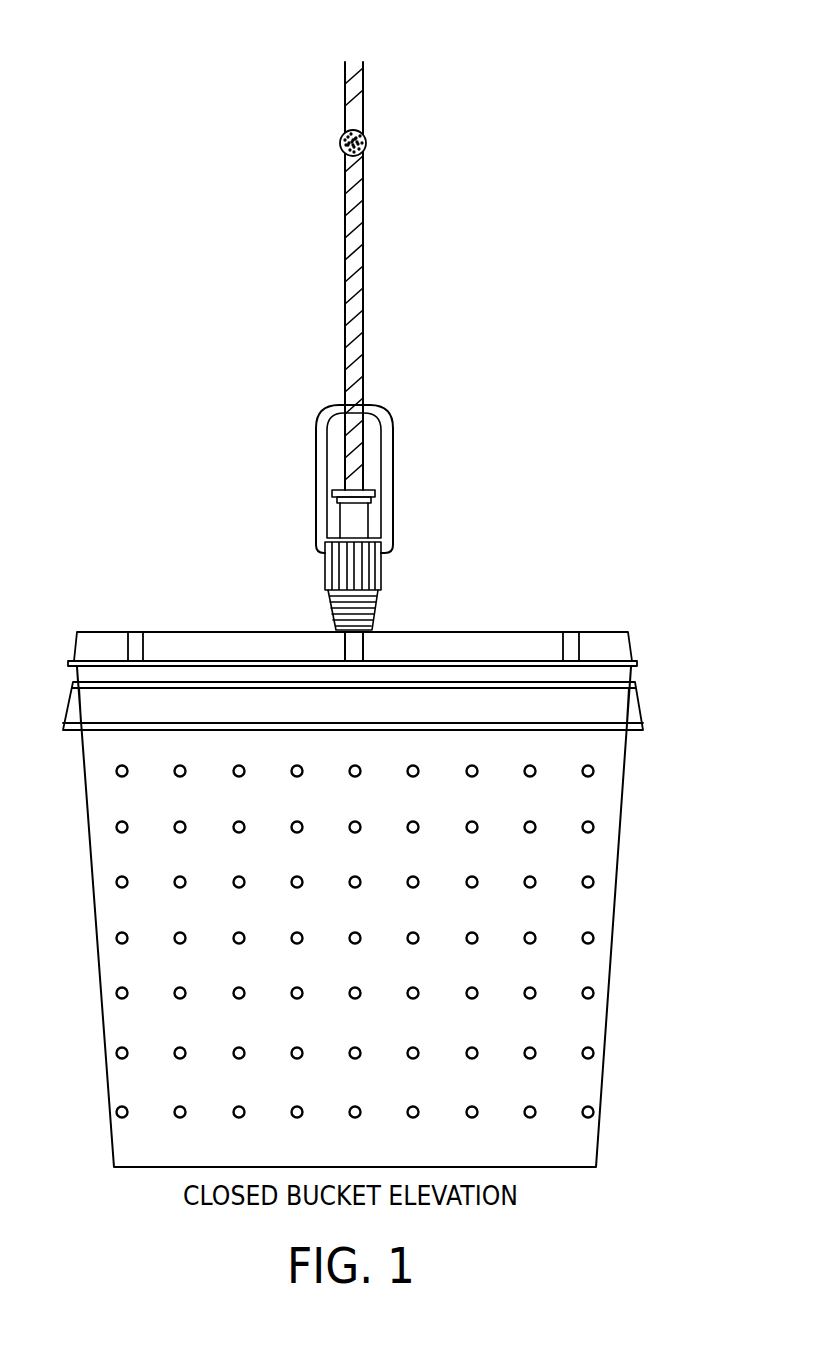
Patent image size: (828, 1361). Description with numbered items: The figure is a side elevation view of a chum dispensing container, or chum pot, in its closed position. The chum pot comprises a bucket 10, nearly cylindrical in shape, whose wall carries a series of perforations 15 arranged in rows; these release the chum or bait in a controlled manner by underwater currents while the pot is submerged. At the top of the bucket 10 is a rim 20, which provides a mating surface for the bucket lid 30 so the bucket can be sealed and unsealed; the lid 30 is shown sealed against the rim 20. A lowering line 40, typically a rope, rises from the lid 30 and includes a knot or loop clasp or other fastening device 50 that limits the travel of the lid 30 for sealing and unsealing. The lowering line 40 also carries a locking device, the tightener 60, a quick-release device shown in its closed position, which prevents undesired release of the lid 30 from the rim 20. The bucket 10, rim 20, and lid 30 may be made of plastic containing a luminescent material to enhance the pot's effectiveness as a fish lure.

The bucket 10 is at (608, 972).
The perforations 15 is at (594, 773).
The rim 20 is at (642, 705).
The bucket lid 30 is at (632, 642).
The lowering line 40 is at (362, 233).
The fastening device 50 is at (367, 140).
The tightener 60 is at (384, 575).